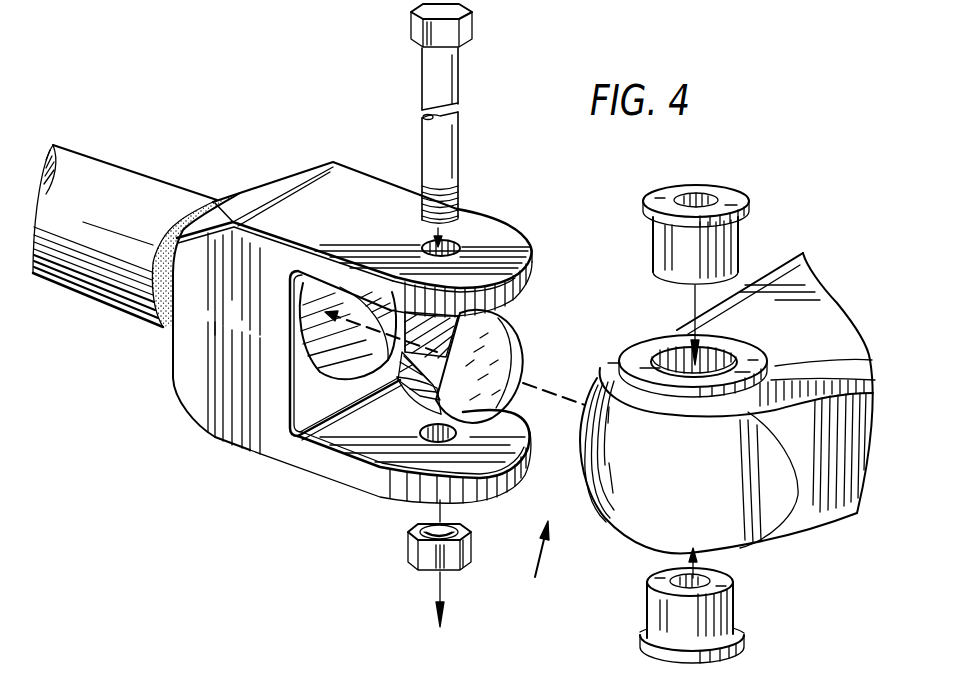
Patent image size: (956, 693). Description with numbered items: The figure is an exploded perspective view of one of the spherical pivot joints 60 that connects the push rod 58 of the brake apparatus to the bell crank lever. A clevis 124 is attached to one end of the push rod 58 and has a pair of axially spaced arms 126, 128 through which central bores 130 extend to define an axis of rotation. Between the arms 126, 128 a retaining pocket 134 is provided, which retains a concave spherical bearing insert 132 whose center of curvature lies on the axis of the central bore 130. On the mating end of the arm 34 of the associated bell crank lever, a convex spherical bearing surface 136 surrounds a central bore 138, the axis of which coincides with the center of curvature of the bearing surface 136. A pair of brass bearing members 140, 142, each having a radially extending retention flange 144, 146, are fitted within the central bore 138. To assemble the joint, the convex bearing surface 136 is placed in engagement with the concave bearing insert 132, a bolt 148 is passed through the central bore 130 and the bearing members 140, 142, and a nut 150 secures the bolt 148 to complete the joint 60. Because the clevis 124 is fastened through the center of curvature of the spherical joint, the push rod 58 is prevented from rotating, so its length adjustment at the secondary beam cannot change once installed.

The arm 34 is at (727, 412).
The push rod 58 is at (133, 190).
The spherical pivot joint 60 is at (534, 564).
The clevis 124 is at (200, 352).
The arm 126 is at (529, 285).
The arm 128 is at (497, 480).
The central bore 130 is at (452, 243).
The concave spherical bearing insert 132 is at (498, 350).
The retaining pocket 134 is at (334, 372).
The convex spherical bearing surface 136 is at (643, 503).
The central bore 138 is at (725, 368).
The brass bearing member 140 is at (713, 263).
The brass bearing member 142 is at (716, 605).
The retention flange 144 is at (745, 204).
The retention flange 146 is at (736, 652).
The bolt 148 is at (447, 90).
The nut 150 is at (463, 570).